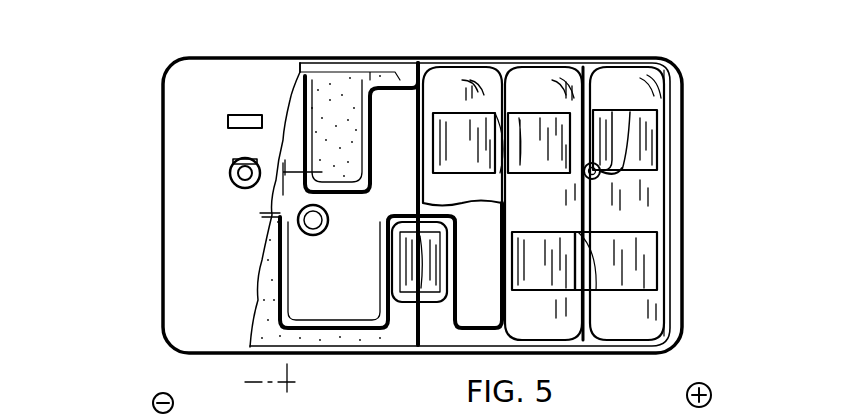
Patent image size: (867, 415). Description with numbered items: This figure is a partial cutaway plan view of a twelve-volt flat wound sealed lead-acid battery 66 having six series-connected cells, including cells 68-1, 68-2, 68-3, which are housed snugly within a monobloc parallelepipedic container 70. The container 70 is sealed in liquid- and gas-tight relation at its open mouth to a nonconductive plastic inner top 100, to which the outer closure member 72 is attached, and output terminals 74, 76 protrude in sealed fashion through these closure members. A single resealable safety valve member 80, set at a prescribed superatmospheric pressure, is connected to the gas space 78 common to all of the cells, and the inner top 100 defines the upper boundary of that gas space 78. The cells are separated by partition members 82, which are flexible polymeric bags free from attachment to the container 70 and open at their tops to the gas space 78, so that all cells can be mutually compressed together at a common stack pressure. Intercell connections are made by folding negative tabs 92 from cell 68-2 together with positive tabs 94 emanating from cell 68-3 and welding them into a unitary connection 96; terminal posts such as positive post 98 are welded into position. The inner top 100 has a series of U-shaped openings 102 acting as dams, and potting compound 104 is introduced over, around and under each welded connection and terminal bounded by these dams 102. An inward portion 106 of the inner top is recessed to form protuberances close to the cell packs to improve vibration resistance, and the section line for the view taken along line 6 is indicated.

The sealed lead-acid battery 66 is at (142, 136).
The cell 68-1 is at (638, 78).
The cell 68-2 is at (562, 174).
The cell 68-3 is at (462, 78).
The monobloc parallelepipedic container 70 is at (675, 282).
The outer closure member 72 is at (190, 75).
The output terminal 74 is at (238, 160).
The output terminal 76 is at (720, 413).
The gas space 78 is at (585, 70).
The resealable safety valve member 80 is at (318, 226).
The partition member 82 is at (676, 70).
The negative tab 92 is at (537, 165).
The positive tab 94 is at (447, 158).
The unitary connection 96 is at (512, 130).
The positive post 98 is at (597, 177).
The inner top 100 is at (402, 83).
The U-shaped opening 102 is at (303, 112).
The potting compound 104 is at (338, 133).
The inward portion 106 is at (382, 104).
The section line 6- 6 is at (690, 168).